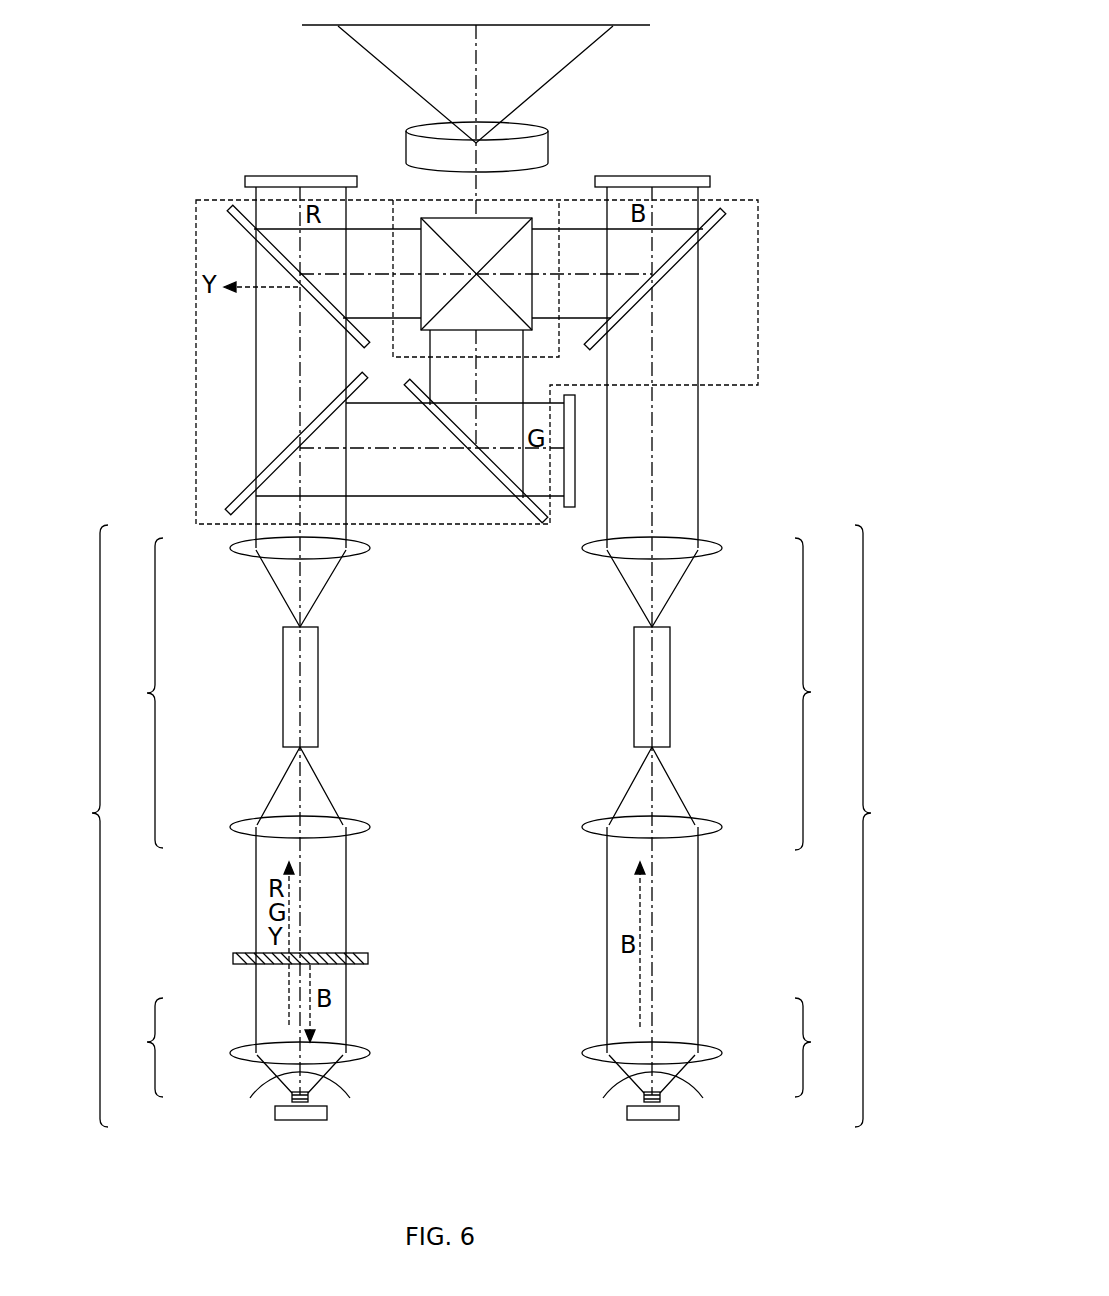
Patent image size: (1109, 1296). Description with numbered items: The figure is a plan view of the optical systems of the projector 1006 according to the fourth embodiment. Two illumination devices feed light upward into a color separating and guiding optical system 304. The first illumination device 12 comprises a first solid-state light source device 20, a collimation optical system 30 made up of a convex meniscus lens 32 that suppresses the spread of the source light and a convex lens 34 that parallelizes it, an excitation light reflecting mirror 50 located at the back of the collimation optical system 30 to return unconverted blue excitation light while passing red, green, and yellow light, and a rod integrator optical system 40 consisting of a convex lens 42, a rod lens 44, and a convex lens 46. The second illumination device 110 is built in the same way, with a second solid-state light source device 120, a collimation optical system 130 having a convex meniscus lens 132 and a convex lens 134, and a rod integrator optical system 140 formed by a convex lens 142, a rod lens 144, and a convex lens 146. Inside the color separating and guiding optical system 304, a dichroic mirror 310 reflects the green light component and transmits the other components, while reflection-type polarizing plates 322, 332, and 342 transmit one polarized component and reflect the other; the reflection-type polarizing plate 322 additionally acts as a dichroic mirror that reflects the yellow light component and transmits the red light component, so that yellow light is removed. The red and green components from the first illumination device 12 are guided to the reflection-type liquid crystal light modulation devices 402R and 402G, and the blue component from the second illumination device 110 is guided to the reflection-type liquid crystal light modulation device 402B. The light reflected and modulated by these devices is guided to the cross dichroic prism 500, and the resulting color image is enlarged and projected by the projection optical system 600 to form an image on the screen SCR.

The projector 1006 is at (832, 42).
The screen SCR is at (645, 28).
The projection optical system 600 is at (405, 145).
The cross dichroic prism 500 is at (498, 218).
The reflection-type liquid crystal light modulation device 402R is at (268, 176).
The reflection-type liquid crystal light modulation device 402G is at (572, 510).
The reflection-type liquid crystal light modulation device 402B is at (672, 176).
The color separating and guiding optical system 304 is at (196, 352).
The dichroic mirror 310 is at (230, 498).
The reflection-type polarizing plate 322 is at (230, 212).
The reflection-type polarizing plate 332 is at (518, 508).
The reflection-type polarizing plate 342 is at (713, 230).
The first illumination device 12 is at (84, 826).
The second illumination device 110 is at (887, 826).
The first solid-state light source device 20 is at (255, 1110).
The second solid-state light source device 120 is at (700, 1110).
The collimation optical system 30 is at (138, 1047).
The collimation optical system 130 is at (828, 1047).
The convex meniscus lens 32 is at (258, 1086).
The convex meniscus lens 132 is at (700, 1087).
The convex lens 34 is at (232, 1053).
The convex lens 134 is at (722, 1053).
The rod integrator optical system 40 is at (138, 693).
The rod integrator optical system 140 is at (828, 694).
The convex lens 42 is at (232, 828).
The convex lens 142 is at (722, 829).
The rod lens 44 is at (283, 668).
The rod lens 144 is at (670, 668).
The convex lens 46 is at (232, 549).
The convex lens 146 is at (722, 549).
The excitation light reflecting mirror 50 is at (233, 960).